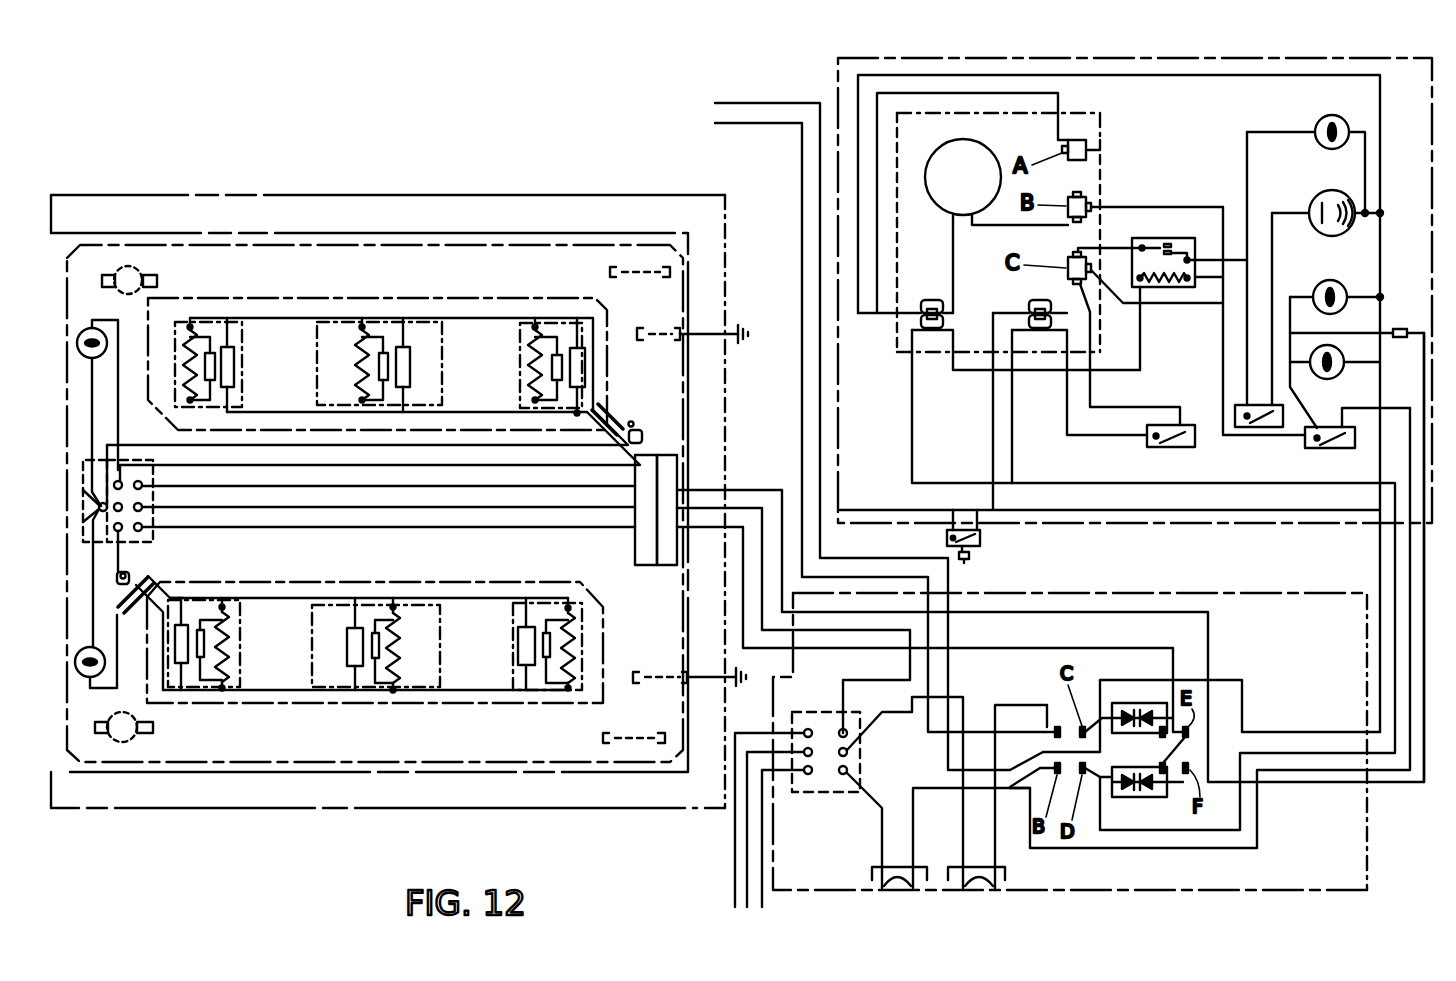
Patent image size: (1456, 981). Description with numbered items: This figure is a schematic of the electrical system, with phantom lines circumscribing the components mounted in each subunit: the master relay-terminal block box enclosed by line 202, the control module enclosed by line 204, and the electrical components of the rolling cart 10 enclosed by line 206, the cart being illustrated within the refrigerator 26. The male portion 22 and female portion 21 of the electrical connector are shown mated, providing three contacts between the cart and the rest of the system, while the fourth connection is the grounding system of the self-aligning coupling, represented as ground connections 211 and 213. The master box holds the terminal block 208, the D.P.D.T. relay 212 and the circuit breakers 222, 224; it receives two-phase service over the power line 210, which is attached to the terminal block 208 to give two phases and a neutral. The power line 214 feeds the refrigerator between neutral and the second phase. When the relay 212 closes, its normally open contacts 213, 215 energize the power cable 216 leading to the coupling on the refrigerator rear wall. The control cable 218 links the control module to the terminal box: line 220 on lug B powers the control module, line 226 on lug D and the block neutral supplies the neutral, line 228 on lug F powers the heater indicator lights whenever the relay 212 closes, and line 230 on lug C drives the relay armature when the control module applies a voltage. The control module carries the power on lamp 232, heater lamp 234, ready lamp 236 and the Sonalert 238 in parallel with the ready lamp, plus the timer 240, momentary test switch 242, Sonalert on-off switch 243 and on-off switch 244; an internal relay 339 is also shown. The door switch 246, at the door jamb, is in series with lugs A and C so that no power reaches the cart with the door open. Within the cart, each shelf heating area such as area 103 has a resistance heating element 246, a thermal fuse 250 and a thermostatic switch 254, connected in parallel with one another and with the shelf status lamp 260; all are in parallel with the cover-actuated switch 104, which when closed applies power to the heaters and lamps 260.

The rolling cart 10 is at (380, 243).
The refrigerator 26 is at (330, 194).
The phantom line circumscribing cart electrical components 206 is at (510, 243).
The door switch / resistance heating element 246 is at (353, 343).
The thermal fuse 250 is at (381, 351).
The thermostatic switch 254 is at (410, 348).
The shelf status lamp 260 is at (90, 329).
The switch 104 is at (628, 421).
The heating area 103 is at (340, 605).
The ground connection 211 is at (742, 327).
The ground connection / normally open relay contact 213 is at (737, 687).
The female portion of electrical connector 21 is at (651, 453).
The male portion of electrical connector 22 is at (670, 459).
The power cable 216 is at (762, 488).
The power line 214 is at (753, 102).
The phantom line circumscribing control module components 204 is at (1272, 59).
The timer 240 is at (1102, 133).
The relay 339 is at (1150, 238).
The ready lamp 236 is at (1322, 118).
The Sonalert 238 is at (1313, 196).
The heater lamp 234 is at (1322, 282).
The power on lamp 232 is at (1340, 375).
The Sonalert on-off switch 243 is at (1247, 409).
The momentary test switch 242 is at (1157, 449).
The on-off switch 244 is at (1320, 449).
The control line 230 is at (1380, 548).
The control cable 218 is at (1424, 567).
The heater indicator line 228 is at (1365, 653).
The neutral line 226 is at (1270, 750).
The power line of control cable 220 is at (1307, 773).
The phantom line circumscribing relay-terminal block box components 202 is at (1367, 845).
The D.P.D.T. relay 212 is at (1068, 718).
The normally open relay contact 215 is at (1122, 792).
The terminal block 208 is at (816, 793).
The circuit breaker 222 is at (885, 866).
The circuit breaker 224 is at (985, 866).
The power line 210 is at (747, 853).